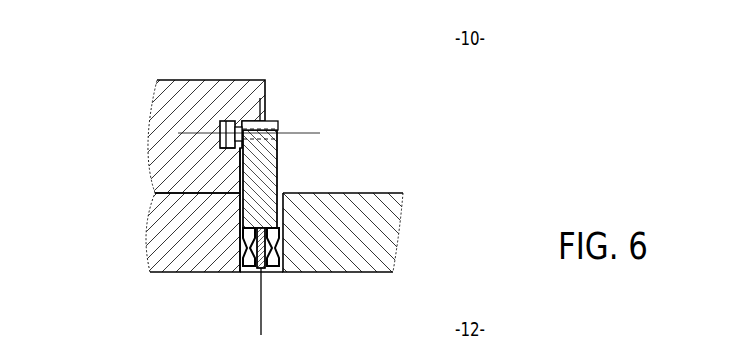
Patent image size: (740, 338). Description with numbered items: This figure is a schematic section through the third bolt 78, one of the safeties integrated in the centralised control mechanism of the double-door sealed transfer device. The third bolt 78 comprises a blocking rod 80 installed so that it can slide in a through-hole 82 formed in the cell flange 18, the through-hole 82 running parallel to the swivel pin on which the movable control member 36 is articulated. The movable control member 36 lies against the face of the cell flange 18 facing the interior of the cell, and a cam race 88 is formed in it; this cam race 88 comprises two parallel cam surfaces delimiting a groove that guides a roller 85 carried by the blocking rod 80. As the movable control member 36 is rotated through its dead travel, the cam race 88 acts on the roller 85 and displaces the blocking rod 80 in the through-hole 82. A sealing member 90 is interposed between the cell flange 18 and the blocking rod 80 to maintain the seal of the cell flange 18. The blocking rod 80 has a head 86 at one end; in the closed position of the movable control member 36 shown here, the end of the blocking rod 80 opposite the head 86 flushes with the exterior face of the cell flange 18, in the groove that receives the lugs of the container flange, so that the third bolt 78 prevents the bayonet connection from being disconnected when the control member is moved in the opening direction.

The cell flange 18 is at (160, 262).
The movable control member 36 is at (157, 80).
The third bolt 78 is at (287, 90).
The blocking rod 80 is at (268, 185).
The through-hole 82 is at (283, 220).
The roller 85 is at (230, 121).
The head 86 is at (257, 273).
The cam race 88 is at (223, 150).
The sealing member 90 is at (283, 245).